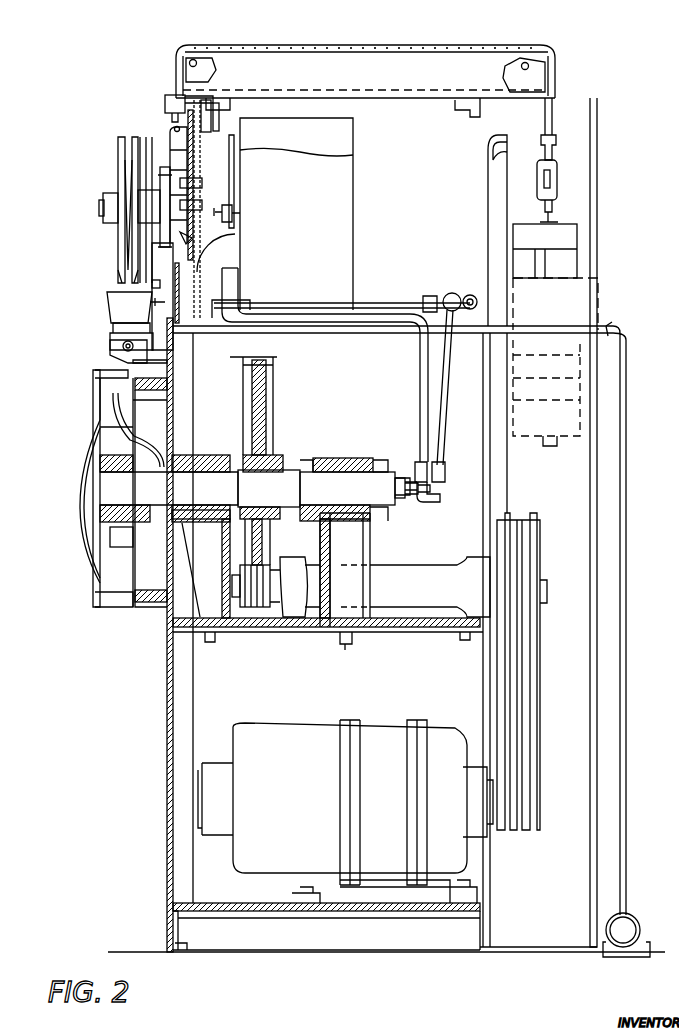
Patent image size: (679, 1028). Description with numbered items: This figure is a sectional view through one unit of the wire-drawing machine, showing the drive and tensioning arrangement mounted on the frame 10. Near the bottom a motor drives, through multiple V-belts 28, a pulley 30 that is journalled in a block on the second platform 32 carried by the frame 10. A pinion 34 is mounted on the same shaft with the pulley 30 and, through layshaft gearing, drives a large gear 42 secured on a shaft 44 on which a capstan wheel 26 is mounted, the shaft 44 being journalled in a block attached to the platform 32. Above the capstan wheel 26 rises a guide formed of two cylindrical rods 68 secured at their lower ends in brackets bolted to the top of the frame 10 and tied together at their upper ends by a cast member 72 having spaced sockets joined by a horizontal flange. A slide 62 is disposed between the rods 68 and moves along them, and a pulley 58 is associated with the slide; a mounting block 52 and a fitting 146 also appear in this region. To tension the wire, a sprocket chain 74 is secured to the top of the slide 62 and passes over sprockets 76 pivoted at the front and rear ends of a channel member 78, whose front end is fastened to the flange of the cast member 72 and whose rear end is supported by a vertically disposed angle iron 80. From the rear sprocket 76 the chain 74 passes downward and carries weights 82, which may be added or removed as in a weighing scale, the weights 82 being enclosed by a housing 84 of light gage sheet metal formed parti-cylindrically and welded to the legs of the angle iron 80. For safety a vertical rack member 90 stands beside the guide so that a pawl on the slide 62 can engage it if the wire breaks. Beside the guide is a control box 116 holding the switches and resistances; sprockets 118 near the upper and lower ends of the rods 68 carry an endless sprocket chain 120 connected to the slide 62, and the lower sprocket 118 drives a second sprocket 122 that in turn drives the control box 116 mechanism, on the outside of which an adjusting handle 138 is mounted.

The frame 10 is at (382, 525).
The capstan wheel 26 is at (95, 580).
The V-belts 28 is at (532, 706).
The pulleys 30 is at (540, 545).
The second platform 32 is at (268, 628).
The pinions 34 is at (248, 612).
The large gears 42 is at (262, 410).
The shafts 44 is at (283, 480).
The mounting block 52 is at (118, 312).
The pulley 58 is at (118, 166).
The slide 62 is at (163, 175).
The cylindrical rods 68 is at (173, 130).
The cast members 72 is at (166, 98).
The sprocket chains 74 is at (380, 58).
The sprockets 76 is at (190, 52).
The channel members 78 is at (345, 57).
The angle irons 80 is at (489, 190).
The weights 82 is at (568, 260).
The housing 84 is at (588, 286).
The vertical rack member 90 is at (194, 155).
The control box 116 is at (354, 222).
The sprockets 118 is at (214, 105).
The endless sprocket chain 120 is at (203, 184).
The second sprocket 122 is at (222, 253).
The adjusting handle 138 is at (236, 168).
The fitting 146 is at (241, 212).